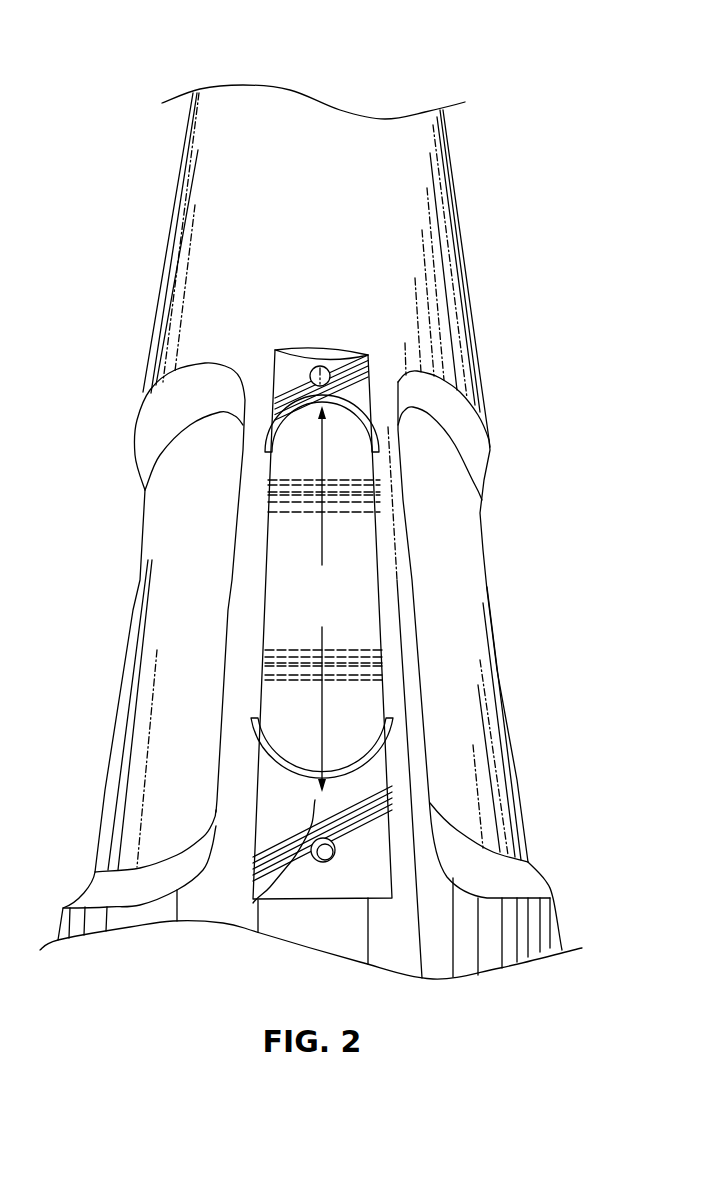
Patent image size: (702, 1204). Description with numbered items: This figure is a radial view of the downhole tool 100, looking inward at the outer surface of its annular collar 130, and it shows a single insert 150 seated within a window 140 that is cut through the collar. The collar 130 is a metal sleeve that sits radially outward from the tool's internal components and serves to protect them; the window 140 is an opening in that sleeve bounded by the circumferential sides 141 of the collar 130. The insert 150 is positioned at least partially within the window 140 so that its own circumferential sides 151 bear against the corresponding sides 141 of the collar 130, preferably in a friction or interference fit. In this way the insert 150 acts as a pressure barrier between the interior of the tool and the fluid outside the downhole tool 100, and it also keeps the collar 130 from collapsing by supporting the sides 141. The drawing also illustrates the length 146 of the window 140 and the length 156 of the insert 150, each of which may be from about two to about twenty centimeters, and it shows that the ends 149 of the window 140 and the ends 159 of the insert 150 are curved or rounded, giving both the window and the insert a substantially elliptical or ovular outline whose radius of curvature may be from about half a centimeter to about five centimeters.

The downhole tool 100 is at (108, 44).
The annular collar 130 is at (330, 273).
The window 140 is at (392, 448).
The circumferential sides of the collar 141 is at (267, 580).
The length of the window 146 is at (323, 599).
The ends of the window 149 is at (253, 903).
The insert 150 is at (282, 640).
The circumferential sides of the insert 151 is at (267, 527).
The length of the insert 156 is at (323, 599).
The ends of the insert 159 is at (322, 844).